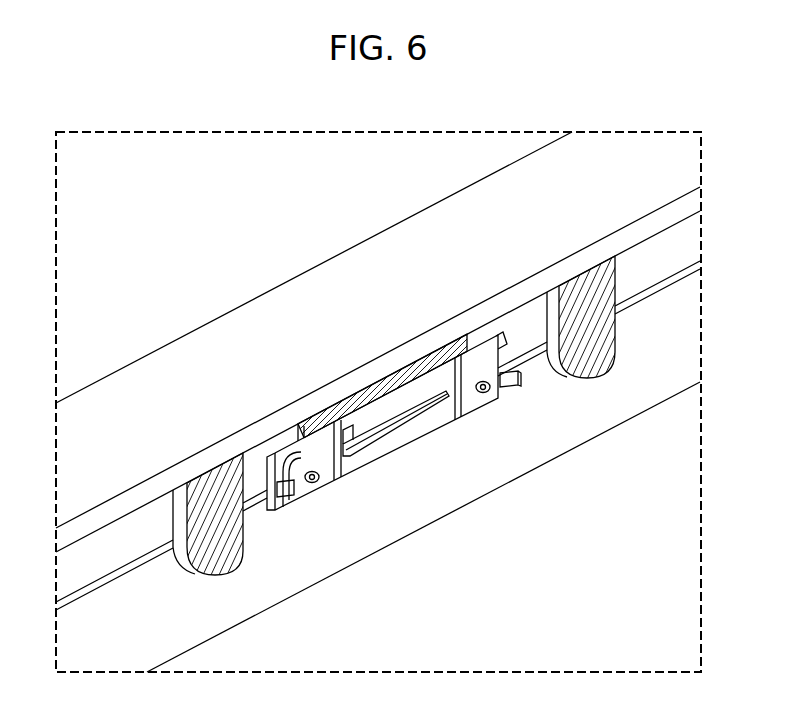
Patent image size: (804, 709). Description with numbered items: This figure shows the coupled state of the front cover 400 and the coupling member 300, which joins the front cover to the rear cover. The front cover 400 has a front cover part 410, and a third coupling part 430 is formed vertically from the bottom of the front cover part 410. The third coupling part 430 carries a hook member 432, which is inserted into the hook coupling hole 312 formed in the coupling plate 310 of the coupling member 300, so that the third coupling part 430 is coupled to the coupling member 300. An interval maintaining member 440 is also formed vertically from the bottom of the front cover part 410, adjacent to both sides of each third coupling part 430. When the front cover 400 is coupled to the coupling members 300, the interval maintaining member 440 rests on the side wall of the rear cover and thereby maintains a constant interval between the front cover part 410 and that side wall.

The coupling member 300 is at (265, 453).
The coupling plate 310 is at (345, 463).
The hook coupling hole 312 is at (393, 432).
The front cover 400 is at (193, 290).
The front cover part 410 is at (300, 303).
The third coupling part 430 is at (393, 383).
The hook member 432 is at (402, 418).
The interval maintaining member 440 is at (587, 362).